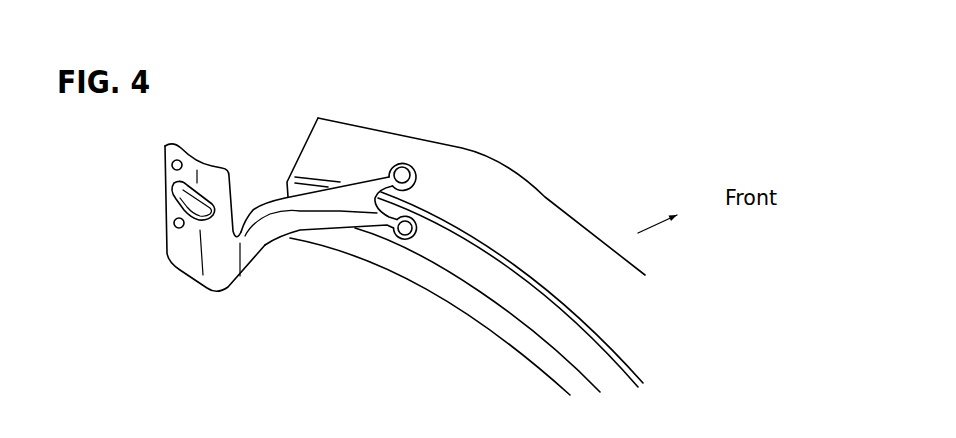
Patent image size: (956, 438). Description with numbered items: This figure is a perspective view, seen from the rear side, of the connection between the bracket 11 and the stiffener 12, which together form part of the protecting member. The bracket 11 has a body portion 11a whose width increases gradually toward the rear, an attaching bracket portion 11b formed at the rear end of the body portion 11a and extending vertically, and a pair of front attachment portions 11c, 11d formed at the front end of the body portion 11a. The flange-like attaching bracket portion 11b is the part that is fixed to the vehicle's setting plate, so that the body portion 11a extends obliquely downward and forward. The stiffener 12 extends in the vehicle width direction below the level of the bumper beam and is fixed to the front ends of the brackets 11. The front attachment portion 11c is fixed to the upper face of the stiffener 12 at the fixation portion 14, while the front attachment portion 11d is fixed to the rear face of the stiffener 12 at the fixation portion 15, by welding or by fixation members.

The bracket 11 is at (299, 235).
The body portion 11a is at (299, 235).
The attaching bracket portion 11b is at (188, 257).
The front attachment portion 11c is at (385, 175).
The front attachment portion 11d is at (390, 224).
The stiffener 12 is at (532, 205).
The fixation portion 14 is at (403, 172).
The fixation portion 15 is at (407, 228).